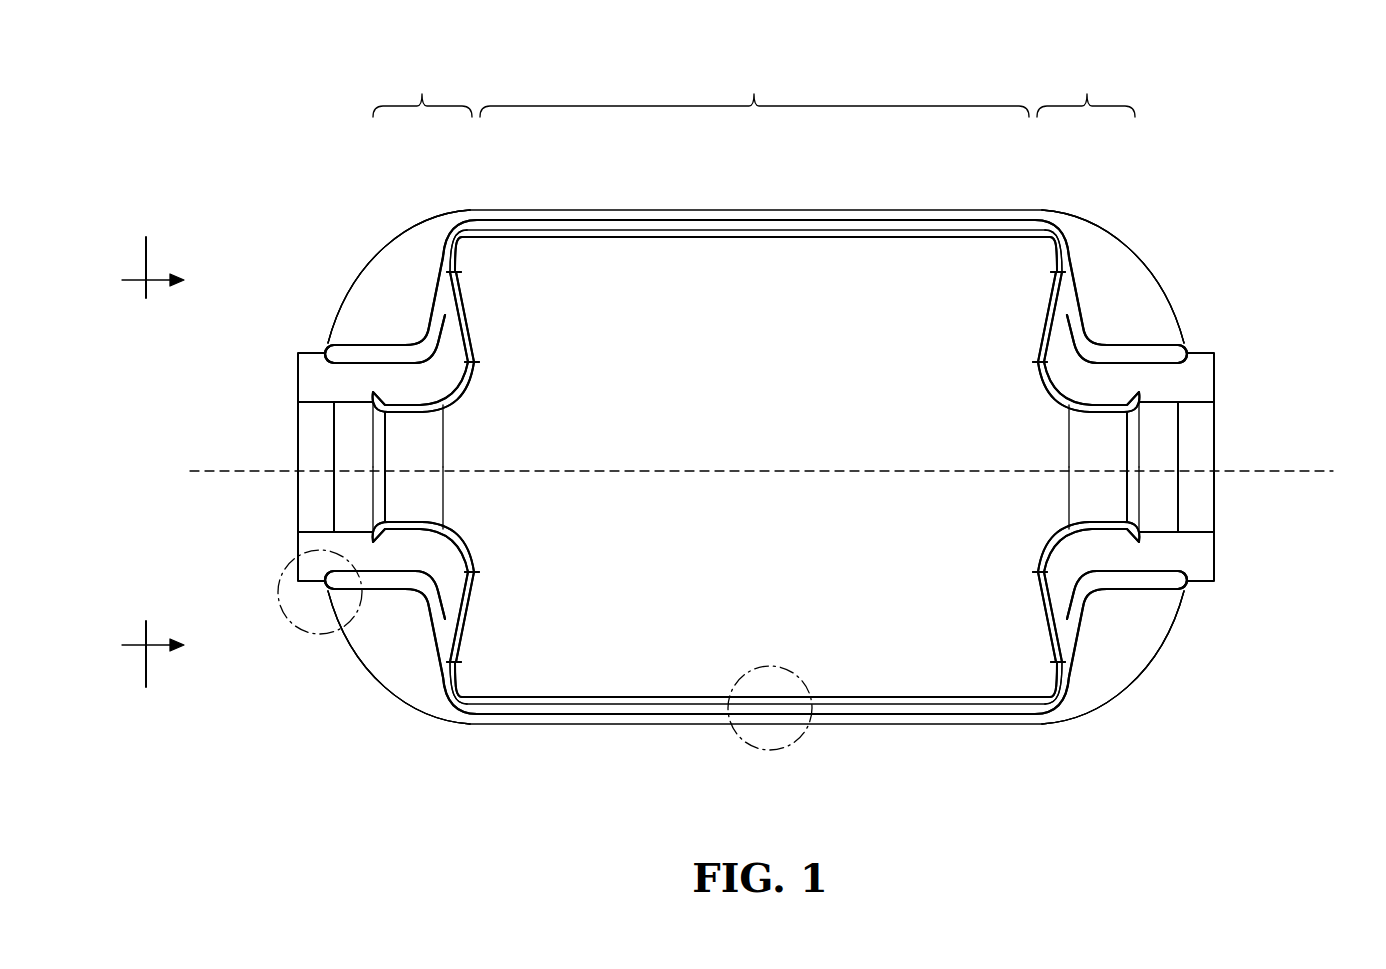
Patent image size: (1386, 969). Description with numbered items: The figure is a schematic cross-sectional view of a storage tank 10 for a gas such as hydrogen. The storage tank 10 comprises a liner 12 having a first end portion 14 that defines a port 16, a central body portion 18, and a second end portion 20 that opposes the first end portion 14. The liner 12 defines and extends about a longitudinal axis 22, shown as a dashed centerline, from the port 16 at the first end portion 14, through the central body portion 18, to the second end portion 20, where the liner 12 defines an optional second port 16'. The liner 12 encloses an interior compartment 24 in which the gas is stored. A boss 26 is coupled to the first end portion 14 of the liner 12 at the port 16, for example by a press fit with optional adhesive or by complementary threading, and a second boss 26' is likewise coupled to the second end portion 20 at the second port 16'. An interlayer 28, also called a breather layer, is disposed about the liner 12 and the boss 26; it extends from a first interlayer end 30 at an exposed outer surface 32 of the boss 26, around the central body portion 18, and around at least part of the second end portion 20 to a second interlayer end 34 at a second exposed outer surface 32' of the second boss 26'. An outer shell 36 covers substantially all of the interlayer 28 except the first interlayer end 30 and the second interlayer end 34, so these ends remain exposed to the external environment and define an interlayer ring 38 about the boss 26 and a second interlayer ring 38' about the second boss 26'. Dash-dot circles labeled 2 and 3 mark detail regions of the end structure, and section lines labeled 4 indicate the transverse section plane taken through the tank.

The storage tank 10 is at (1152, 174).
The liner 12 is at (510, 233).
The first end portion 14 is at (422, 87).
The port 16 is at (433, 467).
The second port 16' is at (1081, 467).
The central body portion 18 is at (754, 88).
The second end portion 20 is at (1086, 88).
The longitudinal axis 22 is at (1276, 470).
The interior compartment 24 is at (739, 445).
The boss 26 is at (326, 448).
The second boss 26' is at (1184, 466).
The interlayer 28 is at (472, 227).
The first interlayer end 30 is at (327, 348).
The exposed outer surface 32 is at (290, 425).
The second exposed outer surface 32' is at (1227, 469).
The second interlayer end 34 is at (1203, 348).
The outer shell 36 is at (563, 217).
The interlayer ring 38 is at (426, 467).
The second interlayer ring 38' is at (1086, 467).
The detail region of FIG. 2 is at (745, 750).
The detail region of FIG. 3 is at (306, 637).
The section line 4- 4 is at (152, 464).